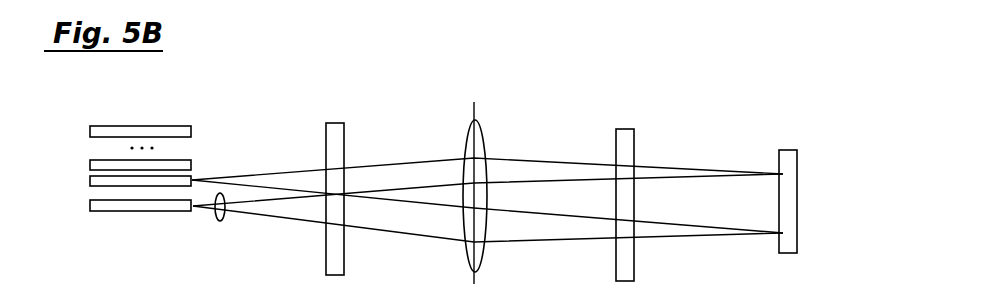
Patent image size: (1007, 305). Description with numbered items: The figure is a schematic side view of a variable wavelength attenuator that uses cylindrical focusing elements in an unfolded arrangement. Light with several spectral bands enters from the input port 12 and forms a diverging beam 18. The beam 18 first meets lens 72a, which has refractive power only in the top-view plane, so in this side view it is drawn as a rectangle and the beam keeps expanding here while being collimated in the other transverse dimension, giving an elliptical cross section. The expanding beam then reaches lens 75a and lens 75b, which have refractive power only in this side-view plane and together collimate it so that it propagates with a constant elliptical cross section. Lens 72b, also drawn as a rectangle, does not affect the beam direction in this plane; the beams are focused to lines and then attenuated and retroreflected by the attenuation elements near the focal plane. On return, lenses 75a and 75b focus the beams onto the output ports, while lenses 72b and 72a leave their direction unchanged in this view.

The input port 12 is at (193, 211).
The diverging beam 18 is at (221, 221).
The cylindrical lens 72a is at (345, 135).
The cylindrical lens 75a is at (465, 138).
The cylindrical lens 75b is at (483, 137).
The cylindrical lens 72b is at (631, 129).